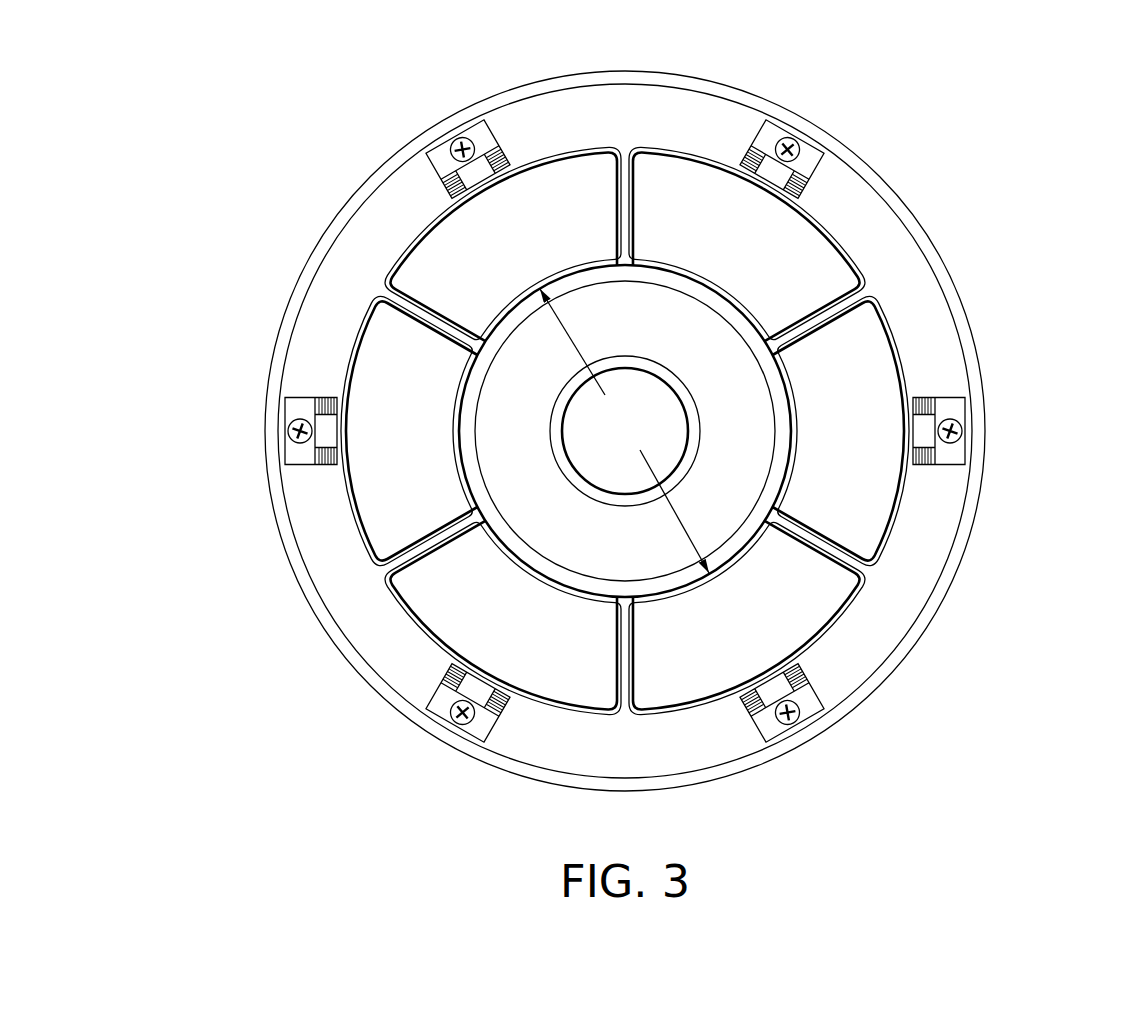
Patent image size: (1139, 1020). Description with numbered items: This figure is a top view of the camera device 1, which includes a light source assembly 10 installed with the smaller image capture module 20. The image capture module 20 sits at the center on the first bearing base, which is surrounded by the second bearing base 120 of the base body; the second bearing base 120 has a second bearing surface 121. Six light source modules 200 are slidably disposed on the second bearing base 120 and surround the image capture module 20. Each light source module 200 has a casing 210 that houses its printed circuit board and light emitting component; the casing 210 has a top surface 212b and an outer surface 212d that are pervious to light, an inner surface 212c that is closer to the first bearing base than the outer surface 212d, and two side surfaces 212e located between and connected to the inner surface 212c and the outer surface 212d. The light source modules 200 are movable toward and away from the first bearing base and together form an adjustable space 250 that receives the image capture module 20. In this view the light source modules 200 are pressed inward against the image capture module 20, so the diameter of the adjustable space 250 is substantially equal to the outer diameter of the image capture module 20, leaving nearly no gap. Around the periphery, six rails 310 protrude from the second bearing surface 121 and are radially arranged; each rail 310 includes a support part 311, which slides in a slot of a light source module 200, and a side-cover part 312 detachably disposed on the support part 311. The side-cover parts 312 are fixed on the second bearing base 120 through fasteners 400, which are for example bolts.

The camera device 1 is at (214, 55).
The light source assembly 10 is at (292, 220).
The image capture module 20 is at (513, 396).
The second bearing base 120 is at (347, 578).
The second bearing surface 121 is at (323, 528).
The light source module 200 is at (825, 208).
The casing 210 is at (875, 501).
The top surface 212b is at (848, 490).
The inner surface 212c is at (785, 412).
The outer surface 212d is at (895, 535).
The side surface 212e is at (823, 308).
The adjustable space 250 is at (655, 262).
The rail 310 is at (1063, 340).
The support part 311 is at (928, 398).
The side-cover part 312 is at (947, 410).
The fastener 400 is at (948, 442).